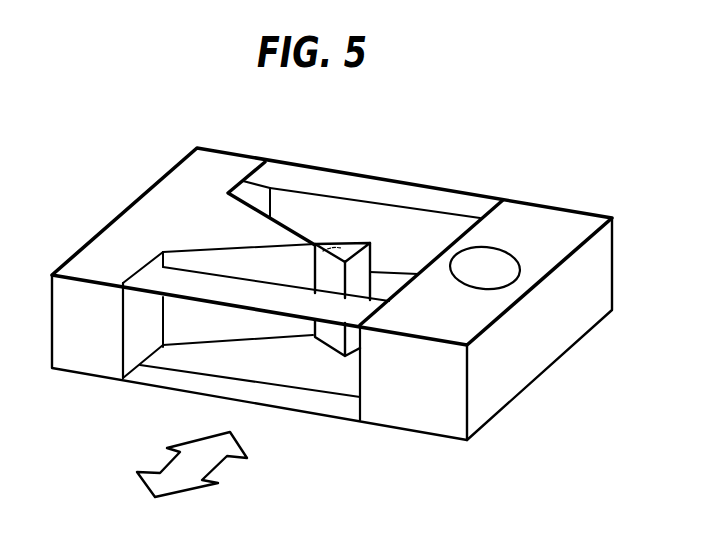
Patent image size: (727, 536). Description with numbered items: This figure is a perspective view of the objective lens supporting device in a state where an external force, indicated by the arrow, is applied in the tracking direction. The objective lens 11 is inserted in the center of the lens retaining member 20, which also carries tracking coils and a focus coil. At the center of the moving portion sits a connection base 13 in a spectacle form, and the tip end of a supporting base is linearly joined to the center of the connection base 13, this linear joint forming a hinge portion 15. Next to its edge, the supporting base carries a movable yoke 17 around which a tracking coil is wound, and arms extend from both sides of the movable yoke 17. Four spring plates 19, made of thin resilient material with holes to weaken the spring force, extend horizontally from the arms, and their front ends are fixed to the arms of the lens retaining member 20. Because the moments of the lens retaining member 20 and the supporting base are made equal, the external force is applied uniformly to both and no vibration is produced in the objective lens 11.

The objective lens 11 is at (505, 275).
The connection base 13 is at (353, 138).
The hinge portion 15 is at (349, 238).
The movable yoke 17 is at (190, 220).
The spring plate 19 is at (430, 200).
The lens retaining member 20 is at (522, 218).